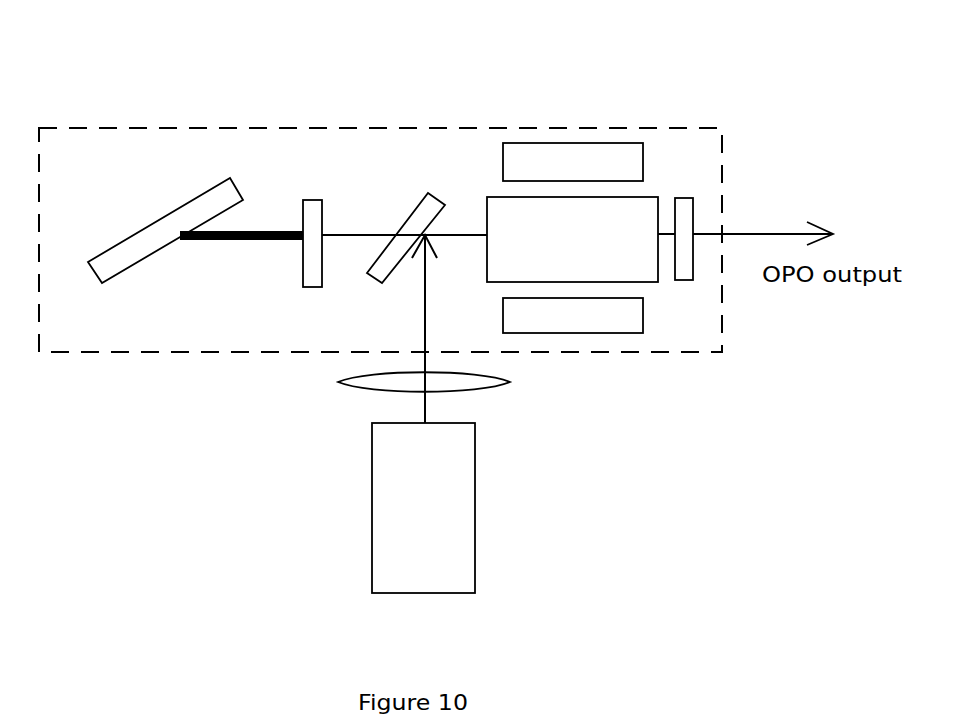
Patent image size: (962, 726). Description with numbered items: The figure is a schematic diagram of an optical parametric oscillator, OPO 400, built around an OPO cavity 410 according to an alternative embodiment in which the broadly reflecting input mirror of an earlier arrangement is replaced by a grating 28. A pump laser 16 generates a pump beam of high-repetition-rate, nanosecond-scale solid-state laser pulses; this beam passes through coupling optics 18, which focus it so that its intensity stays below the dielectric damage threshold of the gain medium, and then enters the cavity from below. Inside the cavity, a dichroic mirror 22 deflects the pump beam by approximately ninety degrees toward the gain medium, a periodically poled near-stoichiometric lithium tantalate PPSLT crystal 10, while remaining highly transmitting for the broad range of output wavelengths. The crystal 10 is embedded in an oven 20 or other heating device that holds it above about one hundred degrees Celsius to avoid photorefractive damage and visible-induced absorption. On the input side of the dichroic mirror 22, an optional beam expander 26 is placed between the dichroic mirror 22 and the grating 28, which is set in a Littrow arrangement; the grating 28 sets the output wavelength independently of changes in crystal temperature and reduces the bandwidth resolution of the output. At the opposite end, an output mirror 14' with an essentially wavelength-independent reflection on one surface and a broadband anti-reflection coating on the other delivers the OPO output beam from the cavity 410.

The OPO 400 is at (418, 191).
The OPO cavity 410 is at (707, 128).
The grating 28 is at (185, 212).
The beam expander 26 is at (307, 258).
The dichroic mirror 22 is at (438, 198).
The oven 20 is at (617, 160).
The PPSLT crystal 10 is at (638, 272).
The output mirror 14' is at (734, 228).
The coupling optics 18 is at (510, 382).
The pump laser 16 is at (475, 517).